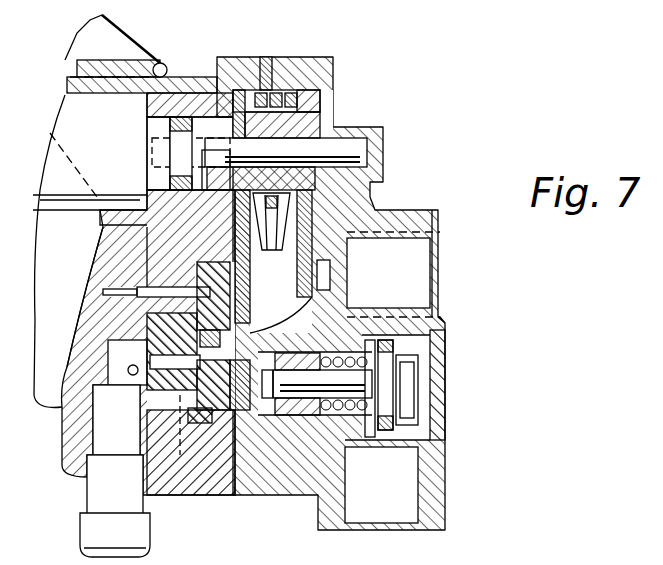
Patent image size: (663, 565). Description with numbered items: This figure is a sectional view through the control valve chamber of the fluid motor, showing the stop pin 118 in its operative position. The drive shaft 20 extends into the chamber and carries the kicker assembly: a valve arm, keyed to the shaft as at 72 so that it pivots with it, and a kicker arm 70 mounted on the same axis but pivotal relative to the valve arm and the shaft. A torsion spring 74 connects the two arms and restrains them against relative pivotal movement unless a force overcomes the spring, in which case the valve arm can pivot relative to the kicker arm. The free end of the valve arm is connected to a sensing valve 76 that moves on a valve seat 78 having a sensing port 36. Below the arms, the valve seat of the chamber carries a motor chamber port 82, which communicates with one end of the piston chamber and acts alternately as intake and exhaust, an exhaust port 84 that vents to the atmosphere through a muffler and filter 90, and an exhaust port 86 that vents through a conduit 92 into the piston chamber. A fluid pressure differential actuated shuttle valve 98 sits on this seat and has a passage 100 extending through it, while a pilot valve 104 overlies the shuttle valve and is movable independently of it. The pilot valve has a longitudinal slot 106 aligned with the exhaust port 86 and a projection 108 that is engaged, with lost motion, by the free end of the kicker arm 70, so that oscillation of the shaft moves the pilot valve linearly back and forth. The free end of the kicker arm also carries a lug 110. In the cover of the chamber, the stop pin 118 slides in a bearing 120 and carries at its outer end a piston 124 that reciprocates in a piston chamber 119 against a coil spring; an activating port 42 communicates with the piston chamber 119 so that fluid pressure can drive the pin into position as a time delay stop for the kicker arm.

The drive shaft 20 is at (160, 127).
The key 72 is at (203, 150).
The torsion spring 74 is at (285, 93).
The longitudinal slot 106 is at (152, 166).
The exhaust port 86 is at (143, 282).
The kicker arm 70 is at (236, 240).
The conduit 92 is at (105, 290).
The projection 108 is at (256, 335).
The shuttle valve 98 is at (147, 332).
The lug 110 is at (262, 378).
The exhaust port 84 is at (133, 343).
The motor chamber port 82 is at (64, 412).
The muffler and filter 90 is at (95, 527).
The passage 100 is at (228, 420).
The pilot valve 104 is at (250, 423).
The bearing 120 is at (292, 420).
The sensing valve 76 is at (313, 250).
The valve seat 78 is at (330, 265).
The sensing port 36 is at (383, 250).
The stop pin 118 is at (360, 382).
The piston 124 is at (395, 370).
The piston chamber 119 is at (412, 425).
The activating port 42 is at (403, 485).